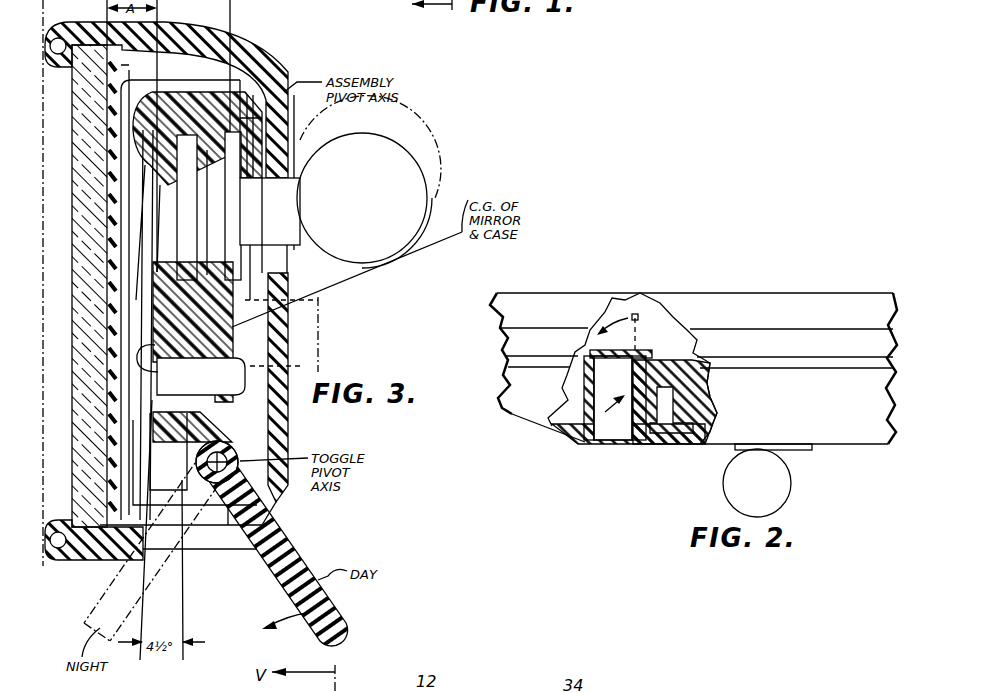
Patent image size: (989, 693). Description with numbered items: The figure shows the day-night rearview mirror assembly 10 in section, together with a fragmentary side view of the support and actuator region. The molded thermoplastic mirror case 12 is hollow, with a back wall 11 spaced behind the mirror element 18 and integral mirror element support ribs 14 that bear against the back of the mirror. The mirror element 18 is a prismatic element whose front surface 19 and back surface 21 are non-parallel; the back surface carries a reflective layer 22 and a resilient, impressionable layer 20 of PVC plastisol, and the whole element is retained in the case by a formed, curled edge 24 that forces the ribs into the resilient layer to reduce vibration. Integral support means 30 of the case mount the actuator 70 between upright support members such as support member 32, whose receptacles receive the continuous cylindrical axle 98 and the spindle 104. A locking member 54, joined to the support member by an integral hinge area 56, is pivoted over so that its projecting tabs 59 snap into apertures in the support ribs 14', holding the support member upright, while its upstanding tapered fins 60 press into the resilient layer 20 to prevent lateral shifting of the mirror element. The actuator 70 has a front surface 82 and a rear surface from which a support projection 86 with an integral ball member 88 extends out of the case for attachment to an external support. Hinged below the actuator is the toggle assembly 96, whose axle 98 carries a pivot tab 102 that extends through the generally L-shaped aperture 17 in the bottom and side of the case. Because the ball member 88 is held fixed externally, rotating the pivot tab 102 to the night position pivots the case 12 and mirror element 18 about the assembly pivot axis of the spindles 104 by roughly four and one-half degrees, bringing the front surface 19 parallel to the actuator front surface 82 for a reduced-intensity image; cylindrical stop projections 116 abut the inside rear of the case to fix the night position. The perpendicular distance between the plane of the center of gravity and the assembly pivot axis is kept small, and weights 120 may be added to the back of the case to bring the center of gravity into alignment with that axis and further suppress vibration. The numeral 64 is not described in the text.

In FIG. 3, the rearview mirror assembly 10 is at (309, 63).
In FIG. 3, the back wall 11 is at (245, 330).
In FIG. 2, the back wall 11 is at (647, 440).
In FIG. 3, the mirror case 12 is at (266, 59).
In FIG. 2, the mirror case 12 is at (693, 354).
In FIG. 3, the mirror element support ribs 14 is at (76, 577).
In FIG. 2, the support ribs 14' is at (549, 406).
In FIG. 3, the L-shaped aperture 17 is at (276, 500).
In FIG. 3, the mirror element 18 is at (73, 355).
In FIG. 3, the front surface 19 is at (73, 382).
In FIG. 3, the resilient impressionable layer 20 is at (70, 510).
In FIG. 3, the back surface 21 is at (118, 168).
In FIG. 3, the reflective layer 22 is at (124, 425).
In FIG. 3, the curled edge 24 is at (44, 36).
In FIG. 2, the support means 30 is at (583, 438).
In FIG. 2, the support member 32 is at (658, 323).
In FIG. 3, the locking member 54 is at (130, 299).
In FIG. 2, the locking member 54 is at (615, 398).
In FIG. 3, the integral hinge area 56 is at (140, 313).
In FIG. 3, the projecting tabs 59 is at (105, 476).
In FIG. 2, the projecting tabs 59 is at (590, 358).
In FIG. 3, the tapered fins 60 is at (133, 247).
In FIG. 2, the post interior 64 is at (613, 398).
In FIG. 3, the actuator 70 is at (263, 118).
In FIG. 2, the actuator 70 is at (686, 428).
In FIG. 3, the front surface 82 is at (160, 374).
In FIG. 3, the support projection 86 is at (212, 197).
In FIG. 3, the ball member 88 is at (372, 211).
In FIG. 2, the ball member 88 is at (773, 494).
In FIG. 3, the toggle assembly 96 is at (230, 448).
In FIG. 3, the continuous cylindrical axle 98 is at (200, 456).
In FIG. 3, the pivot tab 102 is at (262, 560).
In FIG. 2, the spindle 104 is at (660, 380).
In FIG. 3, the cylindrical stop projections 116 is at (300, 366).
In FIG. 3, the weights 120 is at (300, 338).